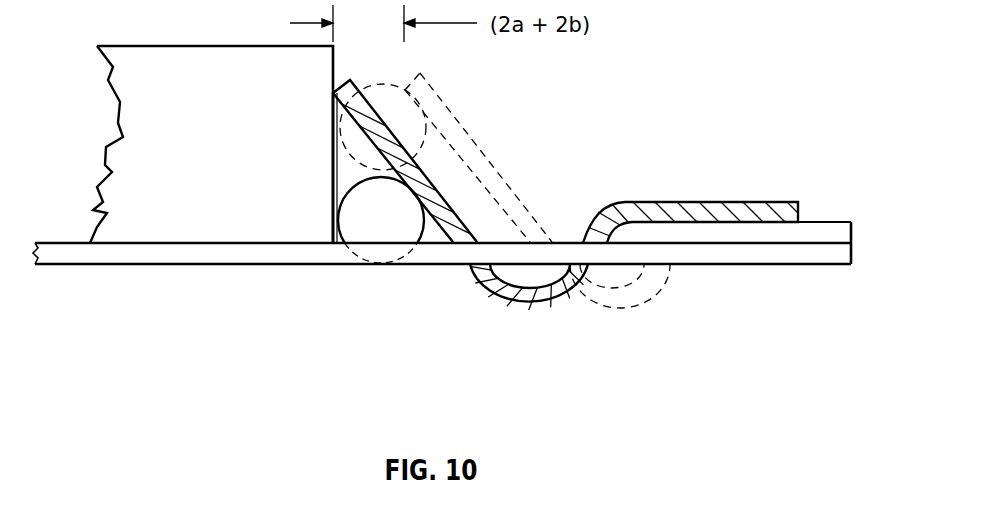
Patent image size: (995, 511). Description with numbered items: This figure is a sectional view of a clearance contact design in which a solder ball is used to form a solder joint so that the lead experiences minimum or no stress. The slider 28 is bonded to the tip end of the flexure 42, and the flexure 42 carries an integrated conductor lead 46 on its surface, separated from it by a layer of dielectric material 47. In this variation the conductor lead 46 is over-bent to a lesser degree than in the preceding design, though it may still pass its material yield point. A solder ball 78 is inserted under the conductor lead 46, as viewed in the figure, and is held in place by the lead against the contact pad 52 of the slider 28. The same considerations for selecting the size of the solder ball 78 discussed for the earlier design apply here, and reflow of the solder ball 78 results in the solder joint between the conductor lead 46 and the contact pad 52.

The slider 28 is at (254, 151).
The flexure 42 is at (780, 260).
The conductor lead 46 is at (740, 201).
The dielectric material layer 47 is at (847, 237).
The contact pad 52 is at (333, 183).
The solder ball 78 is at (363, 228).